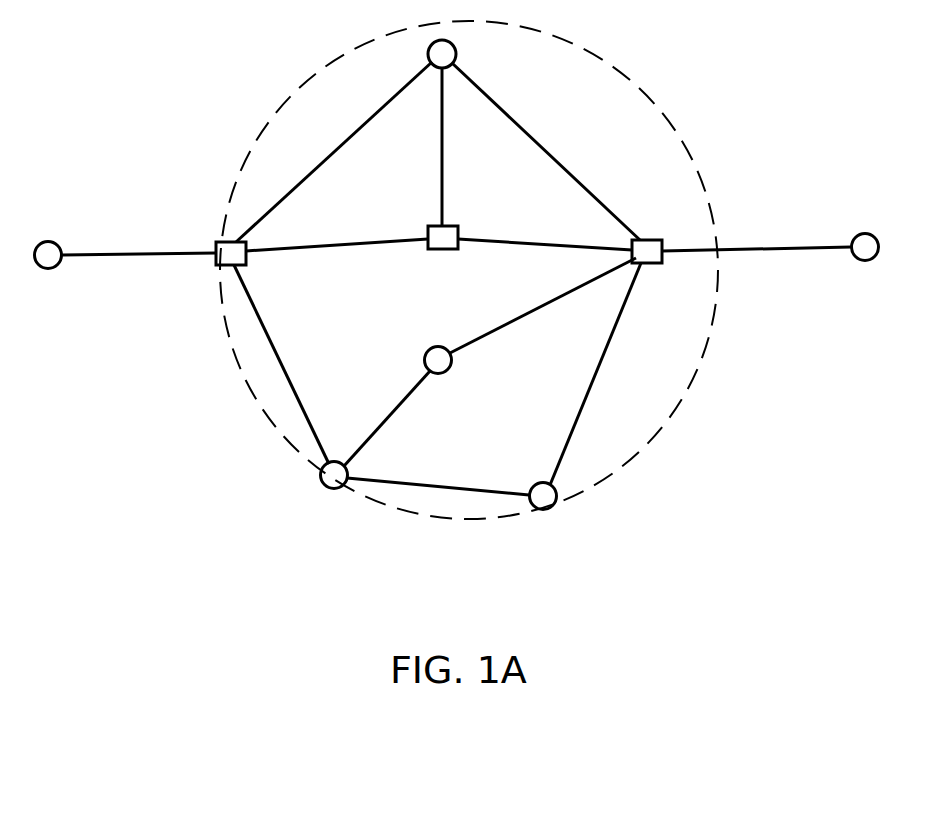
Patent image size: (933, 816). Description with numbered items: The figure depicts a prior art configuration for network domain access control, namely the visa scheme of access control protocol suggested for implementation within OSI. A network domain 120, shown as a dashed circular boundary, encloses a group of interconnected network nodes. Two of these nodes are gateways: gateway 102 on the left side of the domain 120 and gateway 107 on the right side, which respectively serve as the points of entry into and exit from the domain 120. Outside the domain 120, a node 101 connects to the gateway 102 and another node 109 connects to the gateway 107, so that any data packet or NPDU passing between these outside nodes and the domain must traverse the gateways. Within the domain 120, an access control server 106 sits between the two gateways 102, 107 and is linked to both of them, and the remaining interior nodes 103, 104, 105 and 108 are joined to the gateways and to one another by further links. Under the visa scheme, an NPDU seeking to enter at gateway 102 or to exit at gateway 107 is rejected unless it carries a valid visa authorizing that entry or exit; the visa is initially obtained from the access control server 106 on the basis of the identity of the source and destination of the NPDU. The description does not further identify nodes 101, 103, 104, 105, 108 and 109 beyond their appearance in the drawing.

The network node (terminal) 101 is at (53, 273).
The gateway 102 is at (261, 275).
The network node 103 is at (332, 493).
The network node 104 is at (470, 54).
The network node 105 is at (452, 378).
The access control server 106 is at (448, 257).
The gateway 107 is at (648, 228).
The network node 108 is at (528, 480).
The network node (terminal) 109 is at (878, 231).
The domain 120 is at (647, 437).